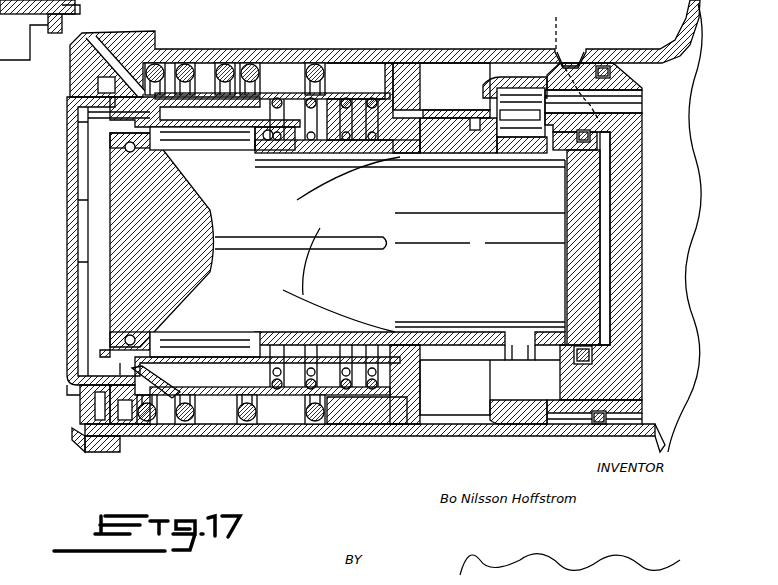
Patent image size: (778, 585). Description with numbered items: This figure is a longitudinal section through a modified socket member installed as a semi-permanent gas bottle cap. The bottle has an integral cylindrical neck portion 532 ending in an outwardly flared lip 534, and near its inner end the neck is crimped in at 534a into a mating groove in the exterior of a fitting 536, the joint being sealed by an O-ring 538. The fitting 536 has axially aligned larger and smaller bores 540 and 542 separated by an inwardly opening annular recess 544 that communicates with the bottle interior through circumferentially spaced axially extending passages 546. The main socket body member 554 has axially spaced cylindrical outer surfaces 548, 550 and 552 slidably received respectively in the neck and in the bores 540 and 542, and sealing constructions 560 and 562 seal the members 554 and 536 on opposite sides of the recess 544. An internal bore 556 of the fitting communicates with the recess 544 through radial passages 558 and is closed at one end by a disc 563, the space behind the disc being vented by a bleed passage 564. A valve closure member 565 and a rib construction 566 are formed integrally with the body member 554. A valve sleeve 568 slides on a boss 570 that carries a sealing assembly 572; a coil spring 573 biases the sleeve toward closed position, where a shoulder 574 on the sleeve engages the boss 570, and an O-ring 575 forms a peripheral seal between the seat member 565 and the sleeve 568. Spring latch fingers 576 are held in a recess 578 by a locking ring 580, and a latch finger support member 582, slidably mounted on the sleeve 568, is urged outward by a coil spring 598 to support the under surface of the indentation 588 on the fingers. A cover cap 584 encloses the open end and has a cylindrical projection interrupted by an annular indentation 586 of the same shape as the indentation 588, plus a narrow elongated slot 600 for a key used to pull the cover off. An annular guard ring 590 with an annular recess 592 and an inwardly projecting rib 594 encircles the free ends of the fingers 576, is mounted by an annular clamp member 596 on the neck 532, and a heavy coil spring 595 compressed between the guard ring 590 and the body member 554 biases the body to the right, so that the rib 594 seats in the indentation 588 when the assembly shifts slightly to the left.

The neck portion 532 is at (300, 63).
The outwardly flared lip 534 is at (168, 22).
The crimp 534a is at (572, 60).
The fitting 536 is at (642, 170).
The O-ring 538 is at (610, 63).
The larger bore 540 is at (445, 110).
The smaller bore 542 is at (532, 124).
The annular recess 544 is at (520, 77).
The axially extending passages 546 is at (630, 113).
The cylindrical outer surface 548 is at (360, 49).
The cylindrical outer surface 550 is at (470, 153).
The cylindrical outer surface 552 is at (522, 153).
The main socket body member 554 is at (460, 63).
The internal bore 556 is at (410, 167).
The radial passages 558 is at (520, 153).
The sealing construction 560 is at (450, 375).
The sealing construction 562 is at (592, 355).
The disc 563 is at (610, 240).
The bleed passage 564 is at (570, 63).
The valve closure member 565 is at (175, 160).
The rib construction 566 is at (318, 240).
The valve sleeve 568 is at (220, 318).
The boss 570 is at (290, 130).
The sealing assembly 572 is at (155, 148).
The coil spring 573 is at (285, 150).
The shoulder 574 is at (150, 345).
The O-ring 575 is at (110, 350).
The spring latch fingers 576 is at (225, 63).
The recess 578 is at (400, 63).
The locking ring 580 is at (345, 436).
The latch finger support member 582 is at (175, 90).
The cover cap 584 is at (70, 150).
The annular indentation 586 is at (125, 370).
The indentation 588 is at (150, 400).
The annular guard ring 590 is at (80, 410).
The annular recess 592 is at (78, 448).
The inwardly projecting rib 594 is at (110, 452).
The coil spring 595 is at (215, 90).
The annular clamp member 596 is at (90, 40).
The coil spring 598 is at (270, 90).
The slot 600 is at (78, 270).